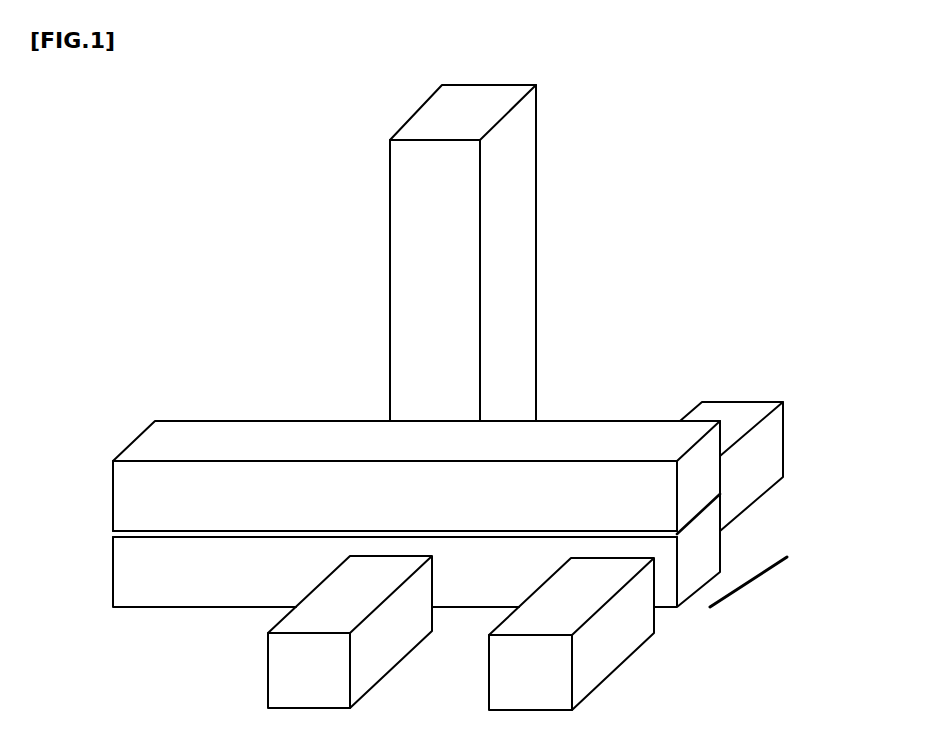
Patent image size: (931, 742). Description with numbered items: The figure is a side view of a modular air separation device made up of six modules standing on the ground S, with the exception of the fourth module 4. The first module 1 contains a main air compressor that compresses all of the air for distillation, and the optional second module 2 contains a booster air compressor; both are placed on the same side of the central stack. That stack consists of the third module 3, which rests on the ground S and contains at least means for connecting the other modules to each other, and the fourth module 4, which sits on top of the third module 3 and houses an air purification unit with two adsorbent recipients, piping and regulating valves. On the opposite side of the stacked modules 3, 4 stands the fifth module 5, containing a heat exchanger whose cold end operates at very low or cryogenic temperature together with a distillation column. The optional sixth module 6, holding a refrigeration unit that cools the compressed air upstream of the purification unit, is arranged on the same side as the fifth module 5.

The first module 1 is at (373, 660).
The second module 2 is at (597, 658).
The third module 3 is at (125, 573).
The fourth module 4 is at (128, 500).
The fifth module 5 is at (525, 262).
The sixth module 6 is at (773, 437).
The ground S is at (753, 571).